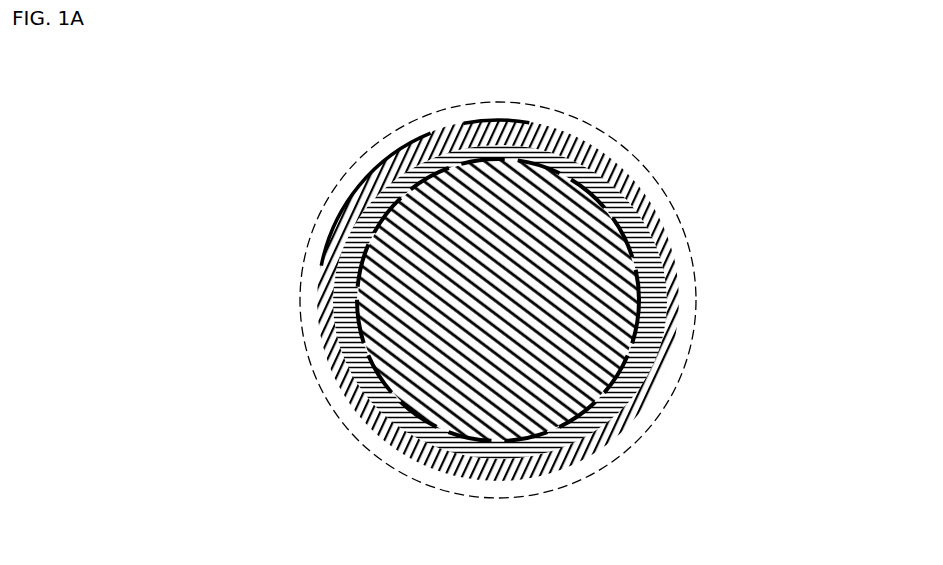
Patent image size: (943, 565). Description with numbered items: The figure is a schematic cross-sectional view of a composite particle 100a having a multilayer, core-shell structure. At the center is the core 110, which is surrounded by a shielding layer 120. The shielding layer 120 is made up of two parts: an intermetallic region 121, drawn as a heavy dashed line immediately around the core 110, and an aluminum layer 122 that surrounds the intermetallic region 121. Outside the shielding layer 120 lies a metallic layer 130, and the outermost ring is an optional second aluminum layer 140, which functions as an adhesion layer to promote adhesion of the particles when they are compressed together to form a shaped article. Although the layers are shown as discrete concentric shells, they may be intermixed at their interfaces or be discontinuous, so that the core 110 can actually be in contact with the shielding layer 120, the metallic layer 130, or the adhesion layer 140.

The composite particle 100a is at (283, 135).
The core 110 is at (565, 373).
The shielding layer 120 is at (602, 302).
The intermetallic region 121 is at (640, 313).
The aluminum layer 122 is at (640, 245).
The metallic layer 130 is at (606, 161).
The second aluminum layer 140 is at (547, 104).